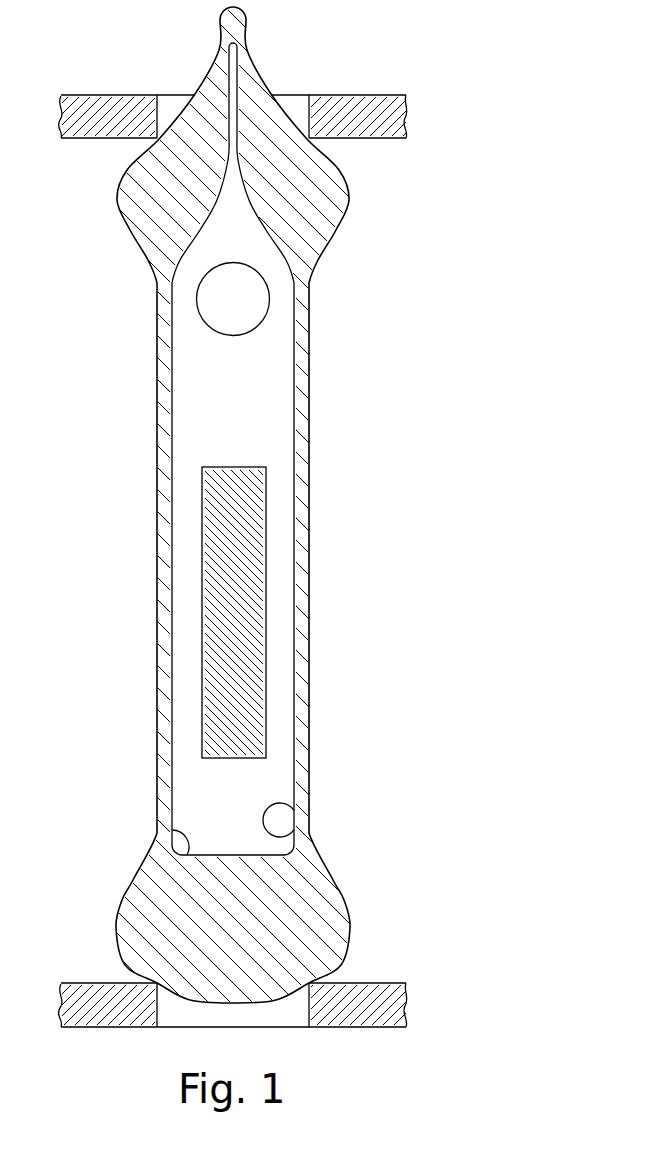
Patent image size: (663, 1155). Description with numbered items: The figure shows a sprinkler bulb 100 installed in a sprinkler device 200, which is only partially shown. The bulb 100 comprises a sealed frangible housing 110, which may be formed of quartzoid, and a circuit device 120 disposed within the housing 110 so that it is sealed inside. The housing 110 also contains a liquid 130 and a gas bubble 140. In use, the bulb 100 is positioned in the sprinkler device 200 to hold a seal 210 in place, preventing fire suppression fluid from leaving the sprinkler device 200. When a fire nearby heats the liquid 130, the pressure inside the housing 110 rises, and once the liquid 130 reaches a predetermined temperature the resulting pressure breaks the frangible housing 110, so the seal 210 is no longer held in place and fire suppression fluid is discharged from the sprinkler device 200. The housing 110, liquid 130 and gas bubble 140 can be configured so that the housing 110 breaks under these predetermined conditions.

The sprinkler bulb 100 is at (455, 397).
The sealed frangible housing 110 is at (148, 229).
The circuit device 120 is at (197, 618).
The liquid 130 is at (197, 780).
The gas bubble 140 is at (235, 309).
The sprinkler device 200 is at (388, 132).
The seal 210 is at (347, 110).